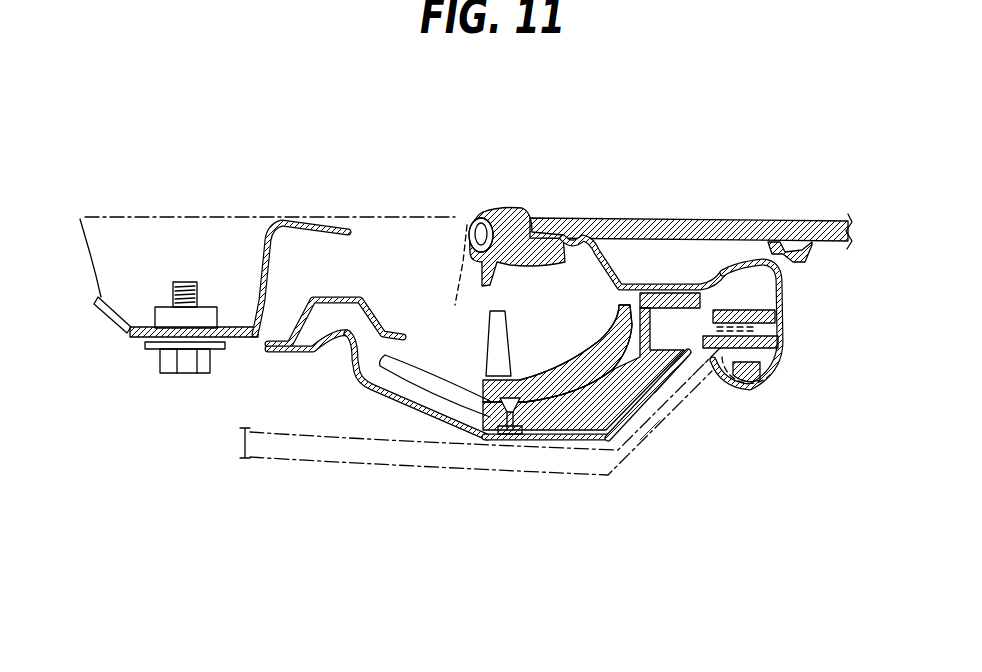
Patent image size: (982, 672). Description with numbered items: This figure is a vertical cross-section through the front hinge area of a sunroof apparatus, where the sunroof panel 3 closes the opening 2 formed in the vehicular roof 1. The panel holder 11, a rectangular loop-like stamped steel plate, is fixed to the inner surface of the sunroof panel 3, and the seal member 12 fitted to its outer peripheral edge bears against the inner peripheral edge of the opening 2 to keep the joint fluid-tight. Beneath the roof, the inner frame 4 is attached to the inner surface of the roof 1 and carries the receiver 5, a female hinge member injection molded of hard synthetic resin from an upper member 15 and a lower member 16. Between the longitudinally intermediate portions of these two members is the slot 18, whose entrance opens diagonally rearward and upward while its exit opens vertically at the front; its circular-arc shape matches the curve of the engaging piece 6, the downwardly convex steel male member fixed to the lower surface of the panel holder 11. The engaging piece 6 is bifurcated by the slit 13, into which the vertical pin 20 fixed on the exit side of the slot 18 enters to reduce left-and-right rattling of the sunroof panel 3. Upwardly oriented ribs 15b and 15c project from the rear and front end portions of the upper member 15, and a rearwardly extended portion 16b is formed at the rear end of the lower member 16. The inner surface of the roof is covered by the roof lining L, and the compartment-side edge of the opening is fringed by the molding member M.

The vehicular roof 1 is at (240, 217).
The opening 2 is at (484, 212).
The sunroof panel 3 is at (800, 220).
The inner frame 4 is at (462, 430).
The receiver 5 is at (599, 428).
The engaging piece 6 is at (645, 392).
The panel holder 11 is at (659, 283).
The seal member 12 is at (510, 210).
The slit 13 is at (430, 388).
The upper member 15 is at (563, 433).
The rib 15b is at (620, 312).
The rib 15c is at (492, 325).
The lower member 16 is at (615, 445).
The rearwardly extended portion 16b is at (690, 360).
The slot 18 is at (697, 377).
The vertical pin 20 is at (497, 436).
The roof lining L is at (354, 463).
The molding member M is at (783, 317).